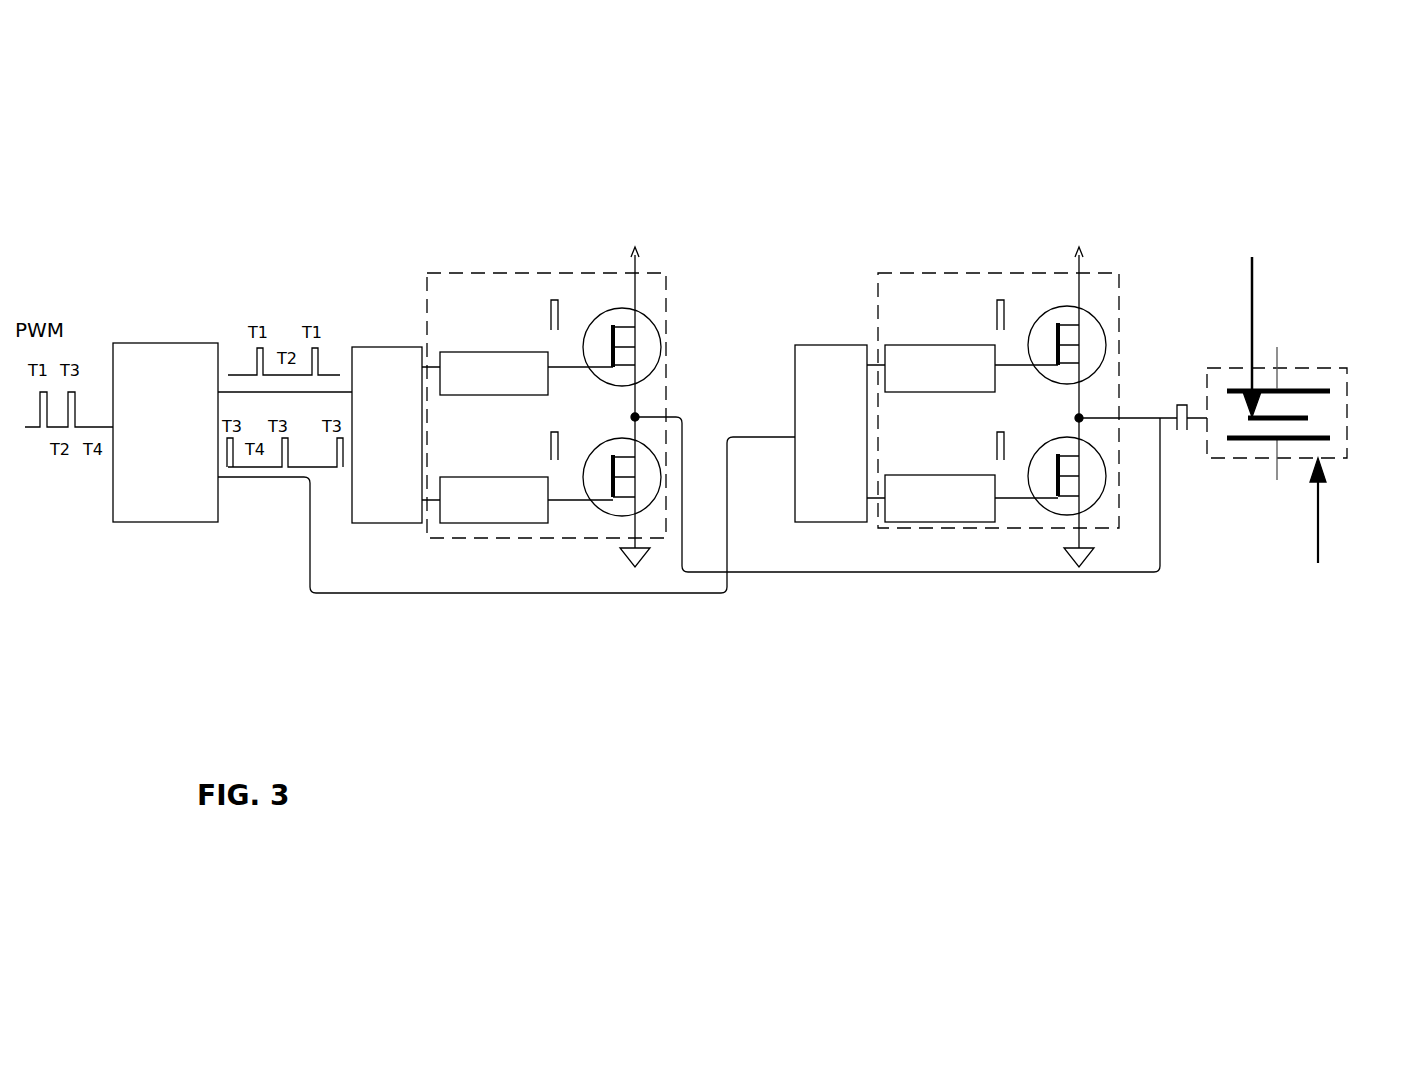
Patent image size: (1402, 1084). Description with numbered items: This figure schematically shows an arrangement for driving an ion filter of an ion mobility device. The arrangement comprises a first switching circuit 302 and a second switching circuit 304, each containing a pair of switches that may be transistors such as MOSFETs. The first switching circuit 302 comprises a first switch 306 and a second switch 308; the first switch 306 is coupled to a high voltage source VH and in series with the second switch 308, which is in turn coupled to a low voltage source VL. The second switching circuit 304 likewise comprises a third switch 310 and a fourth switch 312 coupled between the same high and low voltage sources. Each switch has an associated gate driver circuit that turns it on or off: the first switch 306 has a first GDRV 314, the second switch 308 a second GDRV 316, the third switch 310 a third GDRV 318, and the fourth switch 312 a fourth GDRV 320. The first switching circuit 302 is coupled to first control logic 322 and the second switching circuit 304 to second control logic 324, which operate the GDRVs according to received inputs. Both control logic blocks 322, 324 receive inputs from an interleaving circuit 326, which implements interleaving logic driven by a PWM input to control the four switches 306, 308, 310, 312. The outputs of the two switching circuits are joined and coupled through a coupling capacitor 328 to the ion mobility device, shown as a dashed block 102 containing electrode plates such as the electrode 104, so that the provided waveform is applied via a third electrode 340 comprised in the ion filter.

The capacitive actuator / MEMS device 102 is at (1293, 387).
The electrode of the capacitive device 104 is at (1257, 440).
The first switching circuit 302 is at (523, 273).
The second switching circuit 304 is at (1037, 272).
The first switch 306 is at (647, 350).
The second switch 308 is at (607, 508).
The third switch 310 is at (1100, 338).
The fourth switch 312 is at (1100, 480).
The first GDRV 314 is at (447, 351).
The second GDRV 316 is at (467, 507).
The third GDRV 318 is at (903, 350).
The fourth GDRV 320 is at (903, 475).
The first control logic 322 is at (407, 349).
The second control logic 324 is at (860, 350).
The interleaving circuit 326 is at (160, 344).
The coupling capacitor 328 is at (1178, 403).
The third electrode 340 is at (1260, 317).